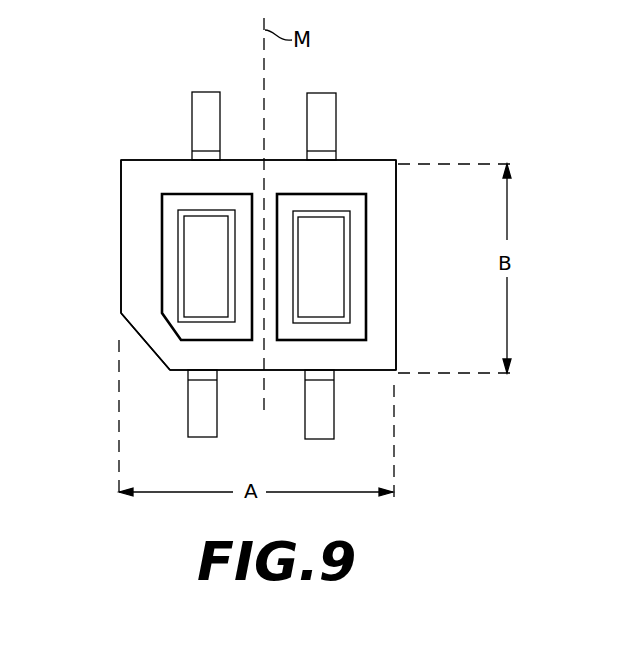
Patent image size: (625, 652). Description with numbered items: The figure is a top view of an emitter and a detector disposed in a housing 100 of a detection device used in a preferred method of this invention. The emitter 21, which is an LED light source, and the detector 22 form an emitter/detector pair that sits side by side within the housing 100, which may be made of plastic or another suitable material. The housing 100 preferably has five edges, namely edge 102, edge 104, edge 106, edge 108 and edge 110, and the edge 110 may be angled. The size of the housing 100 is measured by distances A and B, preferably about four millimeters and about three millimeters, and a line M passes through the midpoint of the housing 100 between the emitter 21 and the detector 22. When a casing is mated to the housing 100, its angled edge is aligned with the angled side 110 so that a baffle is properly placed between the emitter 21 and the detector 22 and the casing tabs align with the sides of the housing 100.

The housing 100 is at (381, 161).
The edge 102 is at (173, 168).
The edge 104 is at (132, 272).
The edge 106 is at (227, 358).
The edge 108 is at (378, 273).
The angled edge 110 is at (165, 347).
The emitter 21 is at (202, 263).
The detector 22 is at (326, 252).